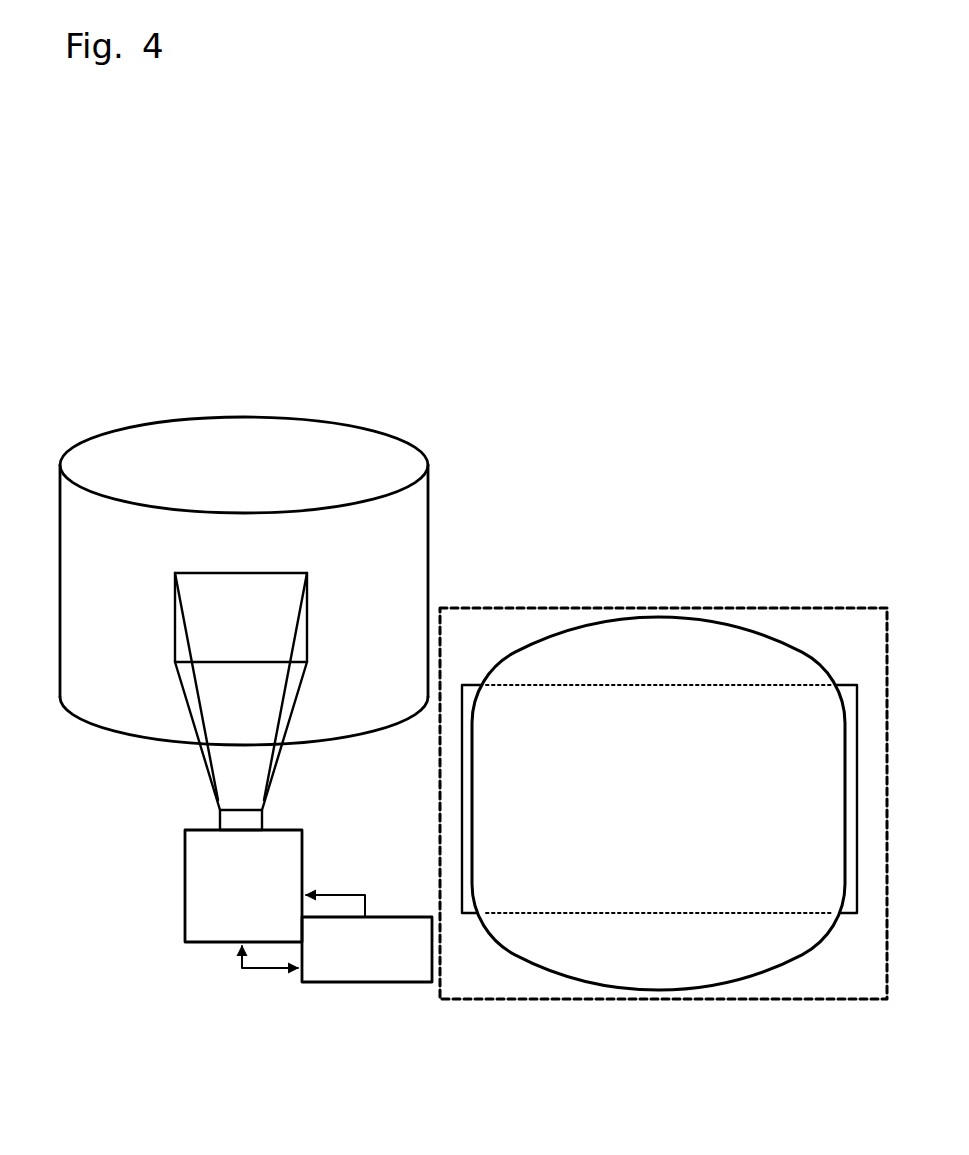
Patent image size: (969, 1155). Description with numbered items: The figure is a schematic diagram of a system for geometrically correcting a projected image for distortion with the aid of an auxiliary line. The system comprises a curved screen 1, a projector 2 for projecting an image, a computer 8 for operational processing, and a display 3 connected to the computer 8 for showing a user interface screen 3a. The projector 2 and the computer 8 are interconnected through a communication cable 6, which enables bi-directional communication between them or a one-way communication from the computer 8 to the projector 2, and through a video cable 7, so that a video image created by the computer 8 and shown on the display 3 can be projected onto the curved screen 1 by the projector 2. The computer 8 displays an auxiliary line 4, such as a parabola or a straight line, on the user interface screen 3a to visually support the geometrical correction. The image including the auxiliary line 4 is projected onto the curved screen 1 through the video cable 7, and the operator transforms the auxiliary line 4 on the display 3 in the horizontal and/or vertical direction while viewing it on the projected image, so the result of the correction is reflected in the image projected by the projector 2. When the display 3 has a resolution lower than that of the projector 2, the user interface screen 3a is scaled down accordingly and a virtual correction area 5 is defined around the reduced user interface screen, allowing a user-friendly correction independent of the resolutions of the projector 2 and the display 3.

The curved screen 1 is at (252, 418).
The projector 2 is at (186, 873).
The display 3 is at (582, 999).
The user interface screen 3a is at (470, 685).
The auxiliary line 4 is at (545, 640).
The virtual correction area 5 is at (805, 630).
The communication cable 6 is at (262, 970).
The video cable 7 is at (336, 895).
The computer 8 is at (360, 984).